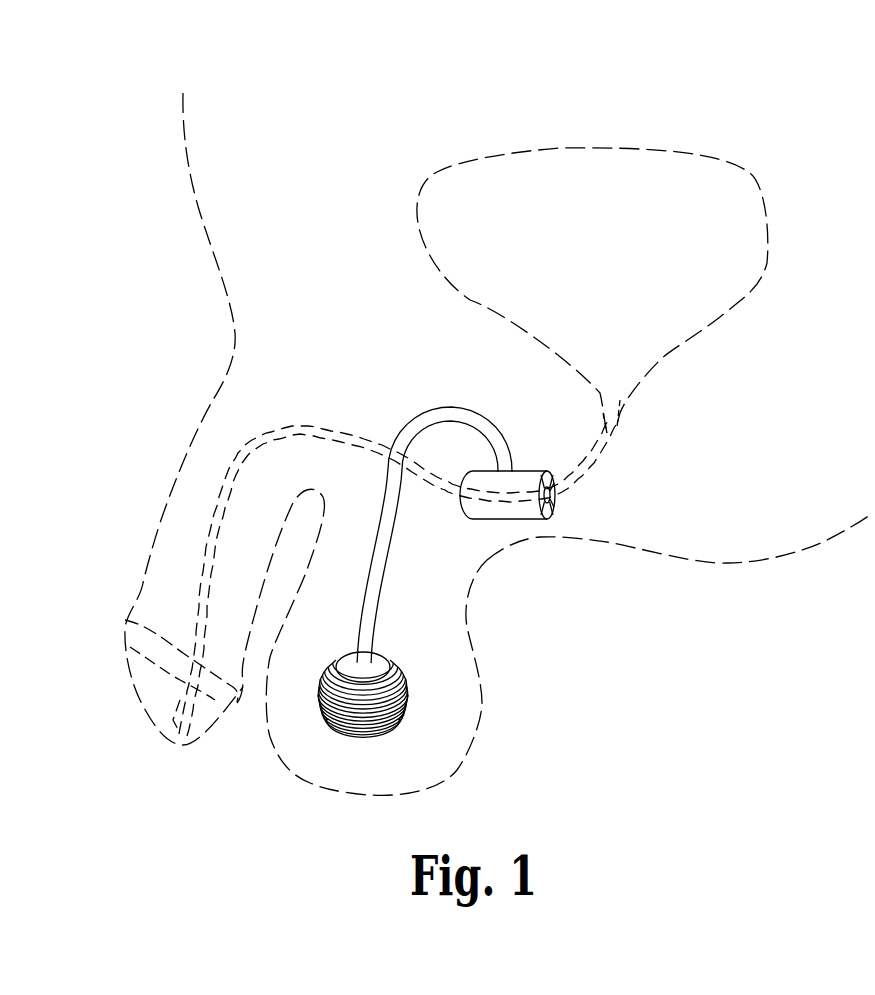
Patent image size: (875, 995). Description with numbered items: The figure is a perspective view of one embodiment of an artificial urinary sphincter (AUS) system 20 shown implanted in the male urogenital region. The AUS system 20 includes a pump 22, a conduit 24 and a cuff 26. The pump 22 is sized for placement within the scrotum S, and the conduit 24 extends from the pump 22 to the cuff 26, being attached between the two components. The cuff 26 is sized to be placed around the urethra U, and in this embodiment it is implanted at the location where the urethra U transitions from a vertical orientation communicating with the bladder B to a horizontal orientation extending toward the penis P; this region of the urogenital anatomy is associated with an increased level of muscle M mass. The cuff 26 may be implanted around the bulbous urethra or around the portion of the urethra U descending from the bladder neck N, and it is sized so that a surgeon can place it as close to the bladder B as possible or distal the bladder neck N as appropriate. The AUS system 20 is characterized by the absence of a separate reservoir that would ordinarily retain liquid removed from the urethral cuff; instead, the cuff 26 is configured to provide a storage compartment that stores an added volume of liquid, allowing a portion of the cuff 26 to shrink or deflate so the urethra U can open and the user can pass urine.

The artificial urinary sphincter (AUS) system 20 is at (436, 532).
The pump 22 is at (378, 733).
The conduit 24 is at (373, 585).
The cuff 26 is at (532, 470).
The bladder B is at (753, 264).
The bladder neck N is at (613, 432).
The muscle M is at (573, 518).
The scrotum S is at (468, 672).
The penis P is at (172, 521).
The urethra U is at (243, 447).